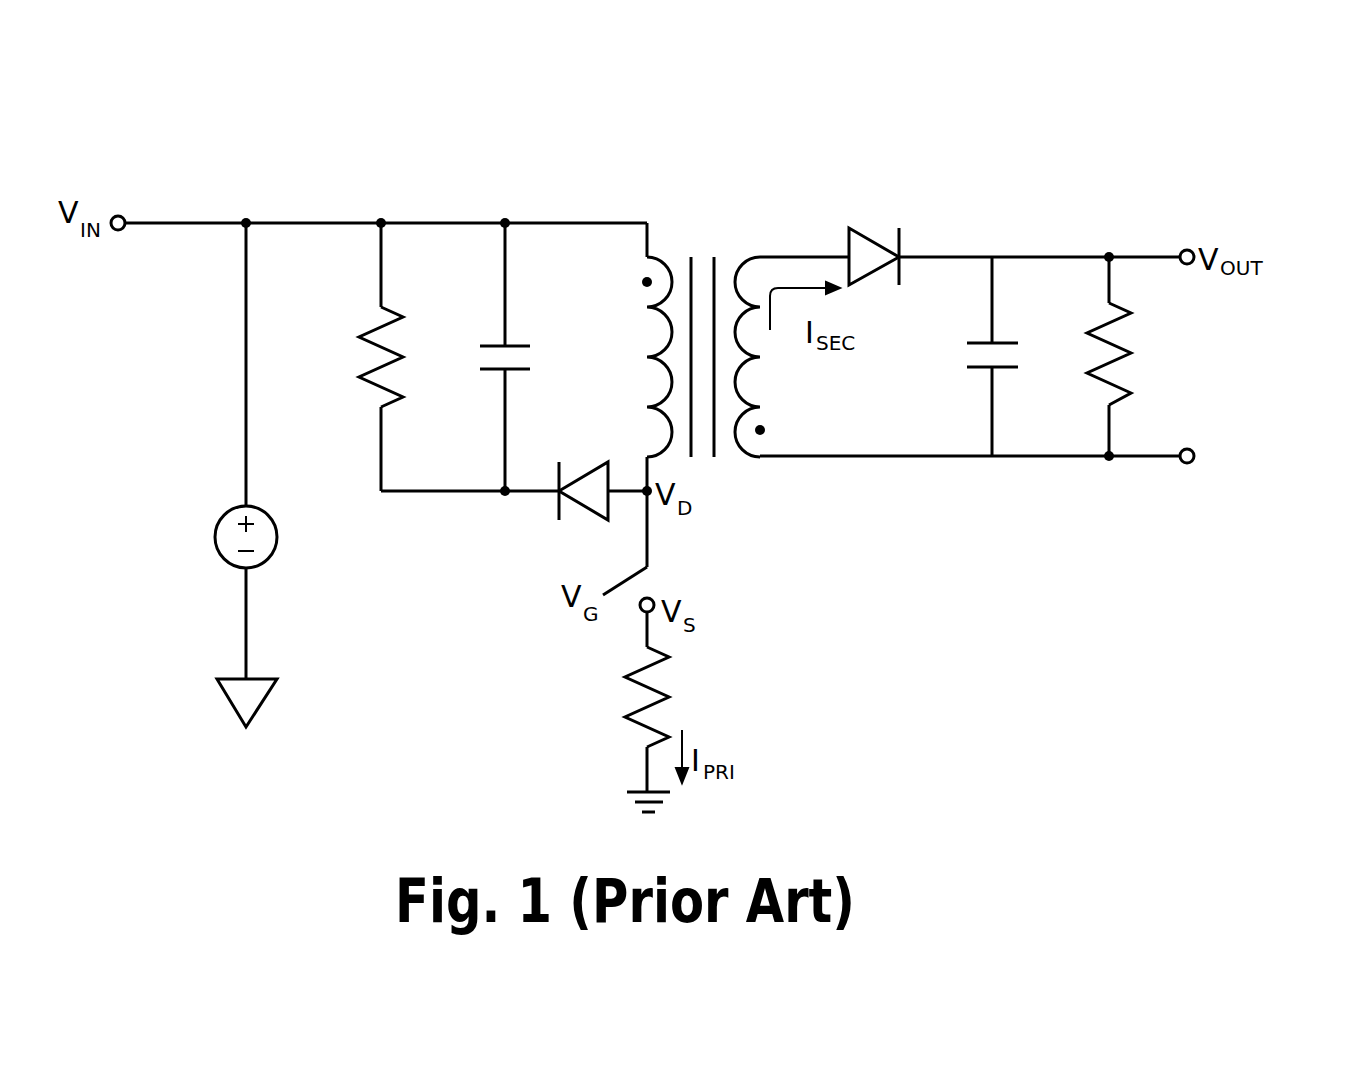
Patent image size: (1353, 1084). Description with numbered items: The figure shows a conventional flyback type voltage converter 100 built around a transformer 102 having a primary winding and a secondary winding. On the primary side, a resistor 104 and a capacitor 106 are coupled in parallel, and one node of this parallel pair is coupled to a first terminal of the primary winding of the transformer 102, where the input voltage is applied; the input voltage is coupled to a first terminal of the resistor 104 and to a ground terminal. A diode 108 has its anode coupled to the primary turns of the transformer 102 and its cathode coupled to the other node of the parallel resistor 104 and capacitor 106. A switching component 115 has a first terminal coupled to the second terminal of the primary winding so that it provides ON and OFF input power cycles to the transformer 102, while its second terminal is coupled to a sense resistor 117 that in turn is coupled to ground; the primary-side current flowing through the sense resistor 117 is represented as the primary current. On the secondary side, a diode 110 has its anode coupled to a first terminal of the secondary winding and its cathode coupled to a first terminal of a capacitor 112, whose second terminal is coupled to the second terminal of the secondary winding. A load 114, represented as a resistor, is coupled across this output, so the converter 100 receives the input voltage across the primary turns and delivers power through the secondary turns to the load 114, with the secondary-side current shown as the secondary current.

The flyback type voltage converter 100 is at (1220, 136).
The transformer 102 is at (670, 248).
The resistor 104 is at (360, 377).
The capacitor 106 is at (492, 346).
The diode 108 is at (559, 520).
The diode 110 is at (899, 228).
The capacitor 112 is at (1033, 322).
The load 114 is at (1090, 377).
The switching component 115 is at (650, 567).
The sense resistor 117 is at (630, 715).